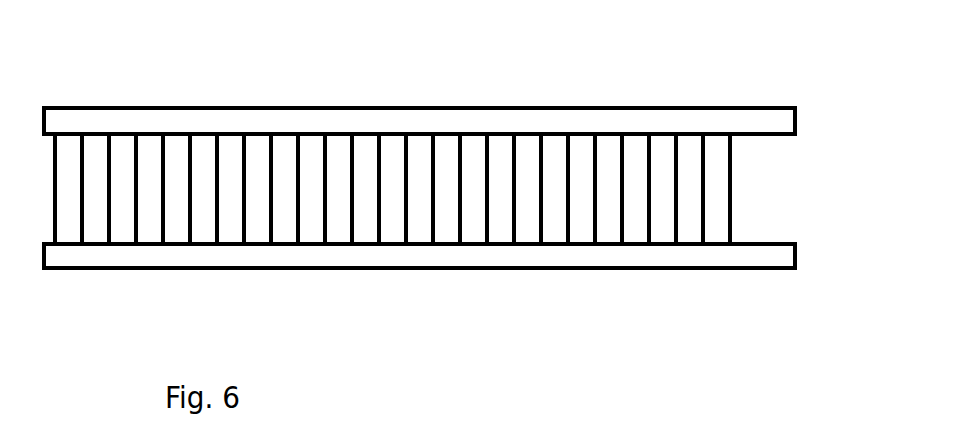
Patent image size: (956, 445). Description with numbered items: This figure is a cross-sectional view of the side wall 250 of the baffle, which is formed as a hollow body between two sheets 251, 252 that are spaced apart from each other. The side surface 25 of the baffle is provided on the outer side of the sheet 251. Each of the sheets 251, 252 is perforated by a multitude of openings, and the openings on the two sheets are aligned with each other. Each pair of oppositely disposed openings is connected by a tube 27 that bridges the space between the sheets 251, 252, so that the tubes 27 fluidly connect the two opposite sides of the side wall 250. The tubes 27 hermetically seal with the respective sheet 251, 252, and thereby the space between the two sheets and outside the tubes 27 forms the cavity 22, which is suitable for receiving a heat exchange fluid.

The cavity 22 is at (445, 172).
The side surface 25 is at (464, 268).
The tube 27 is at (389, 219).
The side wall 250 is at (456, 186).
The sheet 251 is at (573, 254).
The sheet 252 is at (492, 120).